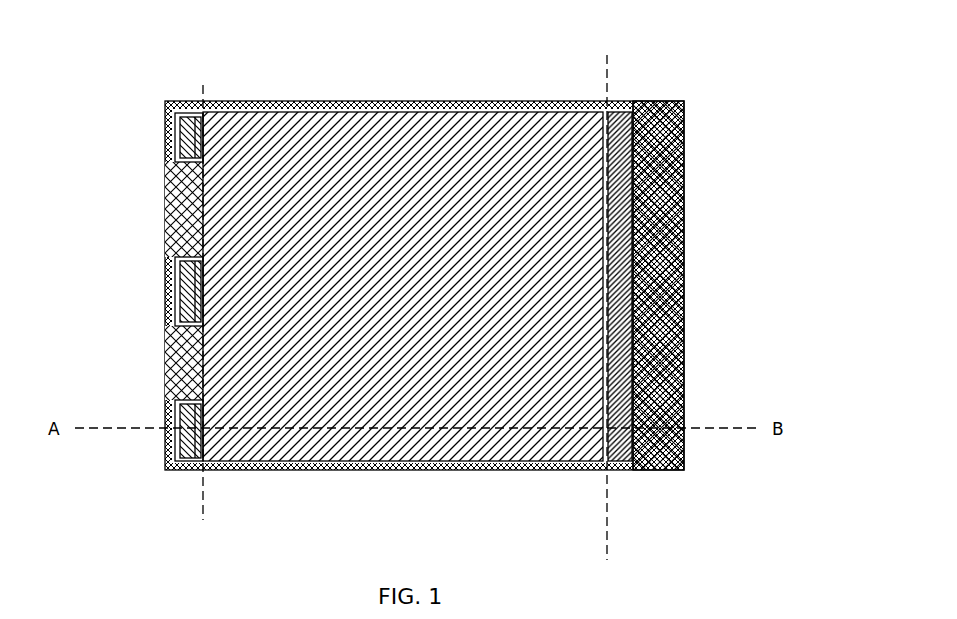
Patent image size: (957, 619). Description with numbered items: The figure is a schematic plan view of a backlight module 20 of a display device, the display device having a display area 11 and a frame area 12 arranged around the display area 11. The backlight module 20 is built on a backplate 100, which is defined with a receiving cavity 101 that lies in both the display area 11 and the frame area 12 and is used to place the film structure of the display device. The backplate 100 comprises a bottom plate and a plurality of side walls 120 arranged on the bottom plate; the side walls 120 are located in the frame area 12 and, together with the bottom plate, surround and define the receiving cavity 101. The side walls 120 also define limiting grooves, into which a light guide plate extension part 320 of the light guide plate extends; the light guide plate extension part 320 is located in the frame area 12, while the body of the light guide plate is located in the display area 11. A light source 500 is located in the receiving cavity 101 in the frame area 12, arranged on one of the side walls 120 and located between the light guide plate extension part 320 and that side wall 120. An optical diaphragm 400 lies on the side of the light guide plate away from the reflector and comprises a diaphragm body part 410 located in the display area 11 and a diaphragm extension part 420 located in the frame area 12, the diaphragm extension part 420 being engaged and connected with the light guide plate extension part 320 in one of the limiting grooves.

The backlight module 20 is at (336, 55).
The display area 11 is at (442, 82).
The receiving cavity 101 is at (509, 106).
The frame area 12 is at (641, 86).
The backplate 100 is at (660, 133).
The side walls 120 is at (668, 188).
The light source 500 is at (635, 236).
The light guide plate extension part 320 is at (185, 127).
The optical diaphragm 400 is at (122, 290).
The diaphragm body part 410 is at (193, 271).
The diaphragm extension part 420 is at (195, 318).